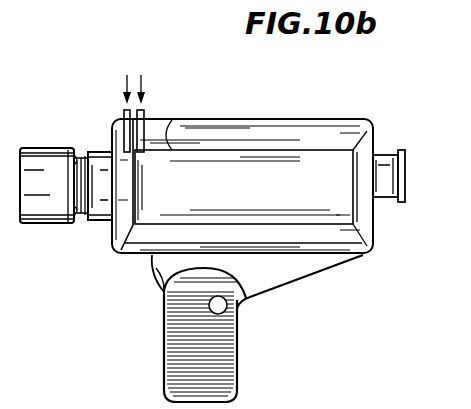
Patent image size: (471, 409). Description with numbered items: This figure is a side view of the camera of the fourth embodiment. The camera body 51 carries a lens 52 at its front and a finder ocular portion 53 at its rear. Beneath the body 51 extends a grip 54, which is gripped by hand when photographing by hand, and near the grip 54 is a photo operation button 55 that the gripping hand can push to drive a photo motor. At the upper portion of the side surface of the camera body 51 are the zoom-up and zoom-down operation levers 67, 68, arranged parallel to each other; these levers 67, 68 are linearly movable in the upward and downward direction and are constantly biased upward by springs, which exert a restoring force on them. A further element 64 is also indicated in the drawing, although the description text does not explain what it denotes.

The camera body 51 is at (292, 166).
The lens 52 is at (52, 210).
The finder ocular portion 53 is at (396, 204).
The grip 54 is at (238, 345).
The photo operation button 55 is at (157, 289).
The lead 64 is at (84, 0).
The zoom-up operation lever 67 is at (124, 111).
The zoom-down operation lever 68 is at (145, 111).